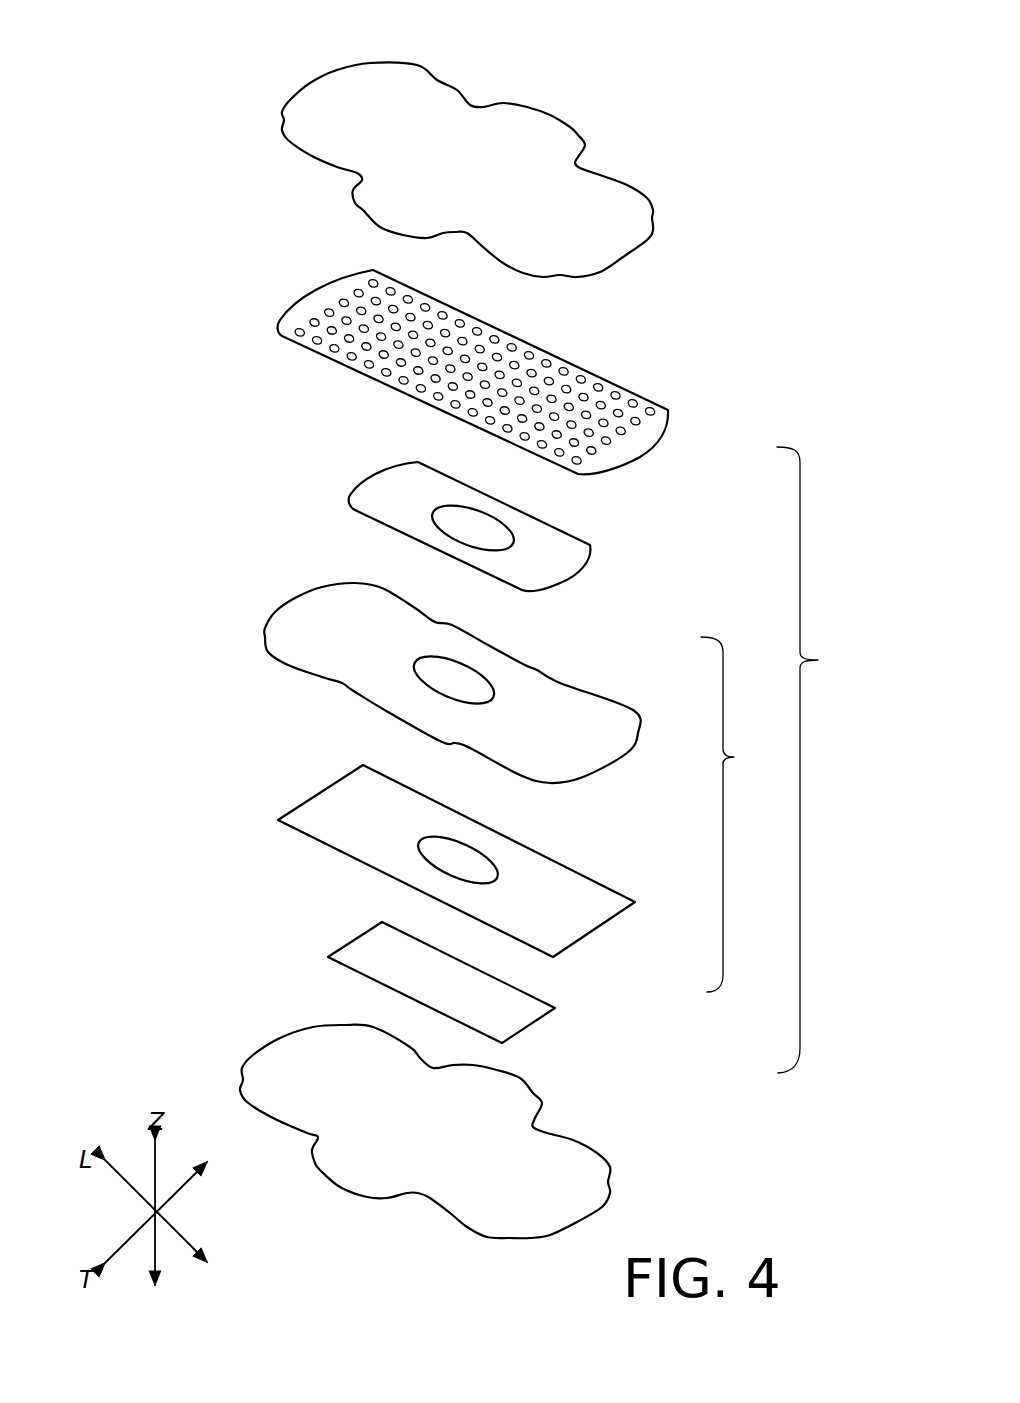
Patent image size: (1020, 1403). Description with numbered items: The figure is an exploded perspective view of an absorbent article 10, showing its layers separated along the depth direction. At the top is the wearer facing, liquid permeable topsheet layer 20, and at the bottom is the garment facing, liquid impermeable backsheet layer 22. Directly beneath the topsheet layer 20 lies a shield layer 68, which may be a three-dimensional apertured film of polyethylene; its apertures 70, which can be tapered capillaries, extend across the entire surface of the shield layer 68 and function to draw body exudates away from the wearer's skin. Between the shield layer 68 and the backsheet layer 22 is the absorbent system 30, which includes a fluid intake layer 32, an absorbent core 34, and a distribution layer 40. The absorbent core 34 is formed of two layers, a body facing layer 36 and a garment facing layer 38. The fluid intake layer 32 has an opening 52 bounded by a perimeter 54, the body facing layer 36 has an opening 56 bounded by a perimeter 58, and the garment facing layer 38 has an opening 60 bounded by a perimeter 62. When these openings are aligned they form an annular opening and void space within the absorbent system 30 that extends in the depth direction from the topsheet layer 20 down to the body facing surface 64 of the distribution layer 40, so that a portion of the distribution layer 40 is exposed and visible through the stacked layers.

The absorbent article 10 is at (768, 115).
The topsheet layer 20 is at (404, 82).
The backsheet layer 22 is at (466, 1212).
The absorbent system 30 is at (557, 752).
The fluid intake layer 32 is at (486, 511).
The absorbent core 34 is at (511, 770).
The body facing layer 36 is at (482, 665).
The garment facing layer 38 is at (470, 861).
The distribution layer 40 is at (470, 982).
The opening 52 is at (441, 499).
The perimeter 54 is at (494, 520).
The opening 56 is at (420, 656).
The perimeter 58 is at (488, 680).
The opening 60 is at (436, 849).
The perimeter 62 is at (490, 859).
The body facing surface 64 is at (433, 973).
The shield layer 68 is at (512, 372).
The apertures 70 is at (598, 407).